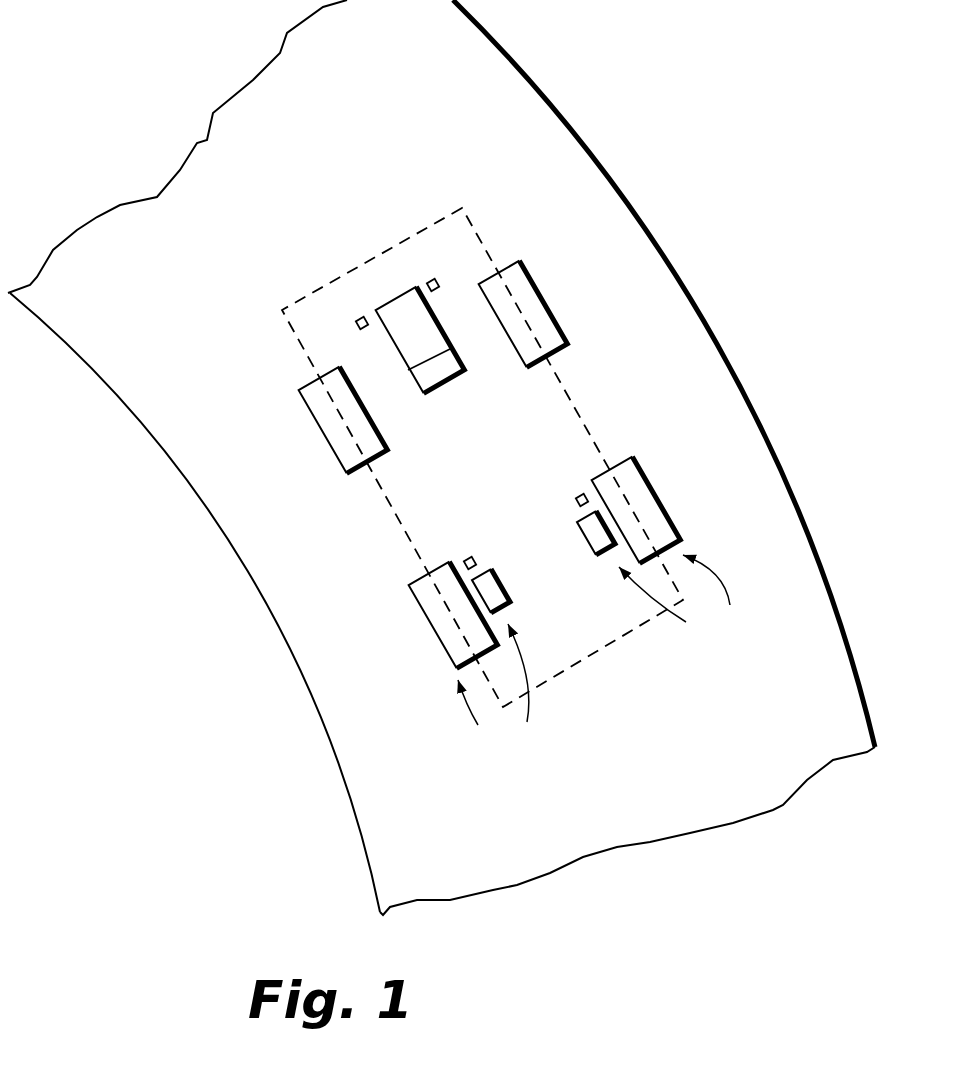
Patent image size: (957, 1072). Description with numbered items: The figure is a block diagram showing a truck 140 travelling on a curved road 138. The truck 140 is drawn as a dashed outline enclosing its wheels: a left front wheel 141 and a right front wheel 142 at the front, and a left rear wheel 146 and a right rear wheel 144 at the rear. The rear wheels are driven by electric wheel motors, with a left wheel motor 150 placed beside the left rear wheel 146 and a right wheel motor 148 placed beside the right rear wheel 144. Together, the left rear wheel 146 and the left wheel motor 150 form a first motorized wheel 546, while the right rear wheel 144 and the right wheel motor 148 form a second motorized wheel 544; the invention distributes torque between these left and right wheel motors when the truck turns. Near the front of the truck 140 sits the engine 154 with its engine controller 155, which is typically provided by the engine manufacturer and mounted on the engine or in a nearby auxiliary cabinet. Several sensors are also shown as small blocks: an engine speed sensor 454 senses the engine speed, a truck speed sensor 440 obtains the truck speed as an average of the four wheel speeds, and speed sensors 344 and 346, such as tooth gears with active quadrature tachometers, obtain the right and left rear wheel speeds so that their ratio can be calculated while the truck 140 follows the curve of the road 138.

The curved road 138 is at (220, 572).
The truck 140 is at (578, 692).
The left front wheel 141 is at (335, 432).
The right front wheel 142 is at (528, 315).
The right rear wheel 144 is at (652, 512).
The left rear wheel 146 is at (438, 610).
The right wheel motor 148 is at (588, 528).
The left wheel motor 150 is at (503, 602).
The engine 154 is at (407, 305).
The engine controller 155 is at (427, 375).
The speed sensor 344 is at (581, 496).
The speed sensor 346 is at (493, 542).
The truck speed sensor 440 is at (434, 279).
The engine speed sensor 454 is at (357, 318).
The second motorized wheel 544 is at (682, 601).
The first motorized wheel 546 is at (493, 692).